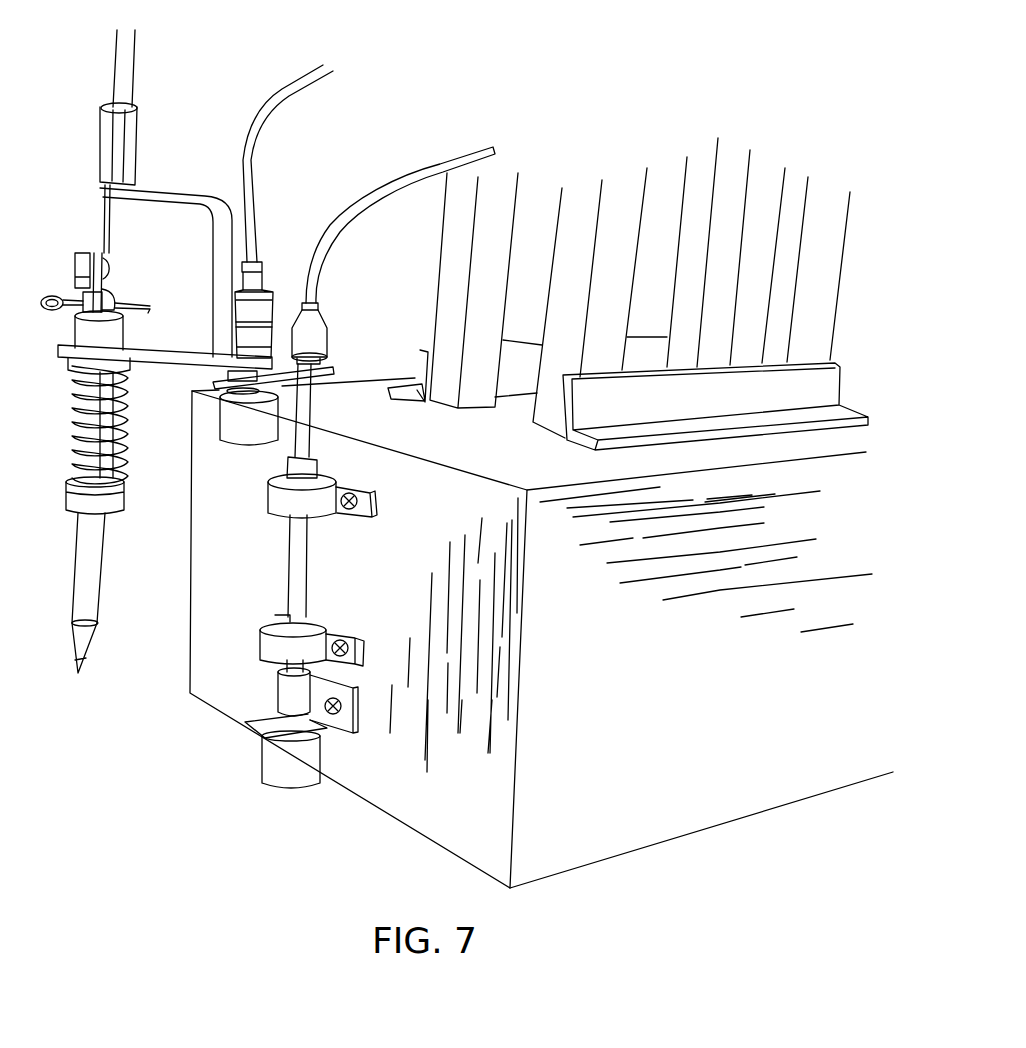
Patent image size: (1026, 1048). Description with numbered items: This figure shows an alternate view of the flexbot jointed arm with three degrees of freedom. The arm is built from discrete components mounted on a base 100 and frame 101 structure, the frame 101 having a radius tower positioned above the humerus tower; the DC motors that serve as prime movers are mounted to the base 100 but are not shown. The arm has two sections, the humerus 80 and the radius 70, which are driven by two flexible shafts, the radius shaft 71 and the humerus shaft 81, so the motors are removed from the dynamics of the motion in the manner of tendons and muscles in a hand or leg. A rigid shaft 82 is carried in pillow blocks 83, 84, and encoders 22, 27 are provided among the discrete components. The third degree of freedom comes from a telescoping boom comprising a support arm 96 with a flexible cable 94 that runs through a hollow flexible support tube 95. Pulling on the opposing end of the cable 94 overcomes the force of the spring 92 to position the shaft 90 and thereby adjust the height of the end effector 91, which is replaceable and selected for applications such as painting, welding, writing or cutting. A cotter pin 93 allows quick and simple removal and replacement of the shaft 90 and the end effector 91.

The encoder 22 is at (260, 770).
The encoder 27 is at (220, 427).
The radius section 70 is at (185, 347).
The radius shaft 71 is at (272, 93).
The humerus section 80 is at (330, 363).
The humerus shaft 81 is at (397, 175).
The rigid shaft 82 is at (288, 582).
The pillow block 83 is at (275, 510).
The pillow block 84 is at (262, 627).
The shaft 90 is at (102, 575).
The end effector 91 is at (82, 665).
The spring 92 is at (123, 460).
The cotter pin 93 is at (52, 310).
The flexible cable 94 is at (103, 225).
The flexible support tube 95 is at (137, 43).
The support arm 96 is at (185, 203).
The base 100 is at (627, 855).
The frame 101 is at (602, 187).